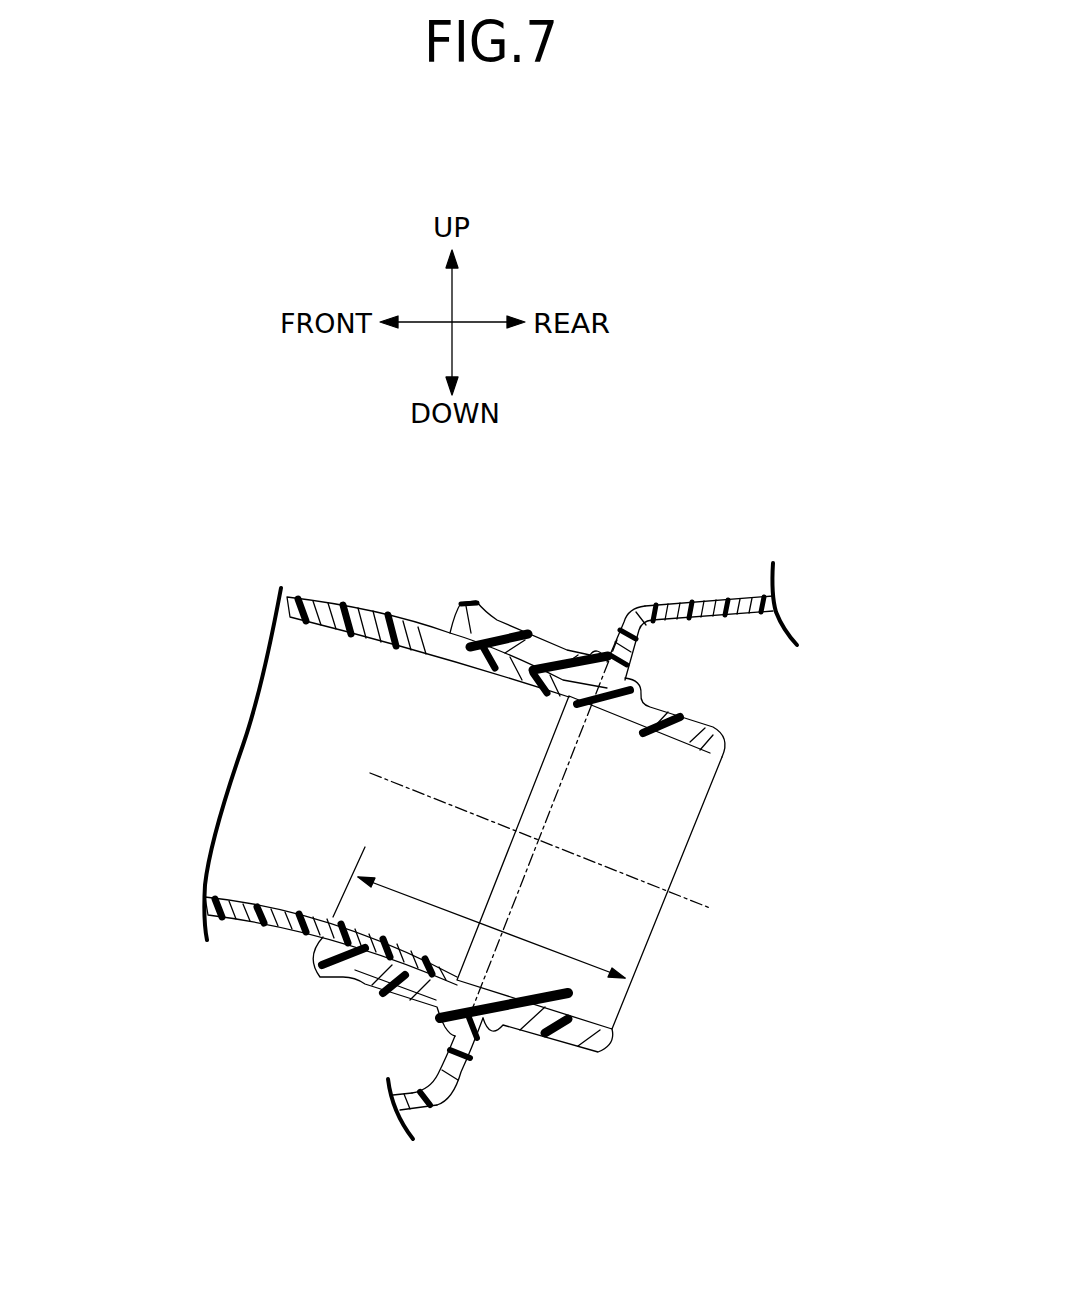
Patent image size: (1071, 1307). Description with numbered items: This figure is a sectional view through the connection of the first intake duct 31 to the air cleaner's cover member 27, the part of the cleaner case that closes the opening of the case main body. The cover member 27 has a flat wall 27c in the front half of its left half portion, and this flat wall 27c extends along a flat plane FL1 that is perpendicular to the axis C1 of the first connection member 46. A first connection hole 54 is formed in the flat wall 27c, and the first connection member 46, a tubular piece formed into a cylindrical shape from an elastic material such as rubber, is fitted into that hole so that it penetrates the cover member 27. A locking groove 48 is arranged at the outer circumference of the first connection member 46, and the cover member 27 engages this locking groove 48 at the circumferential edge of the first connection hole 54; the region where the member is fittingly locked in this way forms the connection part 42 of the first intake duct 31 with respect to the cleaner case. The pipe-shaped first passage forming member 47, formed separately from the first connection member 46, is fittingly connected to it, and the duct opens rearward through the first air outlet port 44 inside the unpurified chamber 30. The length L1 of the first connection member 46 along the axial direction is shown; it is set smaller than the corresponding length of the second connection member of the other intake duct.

The cover member 27 is at (703, 607).
The flat wall 27c is at (624, 623).
The unpurified chamber 30 is at (541, 885).
The first intake duct 31 is at (365, 609).
The connection part 42 is at (447, 1053).
The first air outlet port 44 is at (657, 925).
The first connection member 46 is at (557, 1040).
The first passage forming member 47 is at (265, 913).
The locking groove 48 is at (474, 1030).
The first connection hole 54 is at (637, 703).
The axis C1 is at (467, 809).
The flat plane FL1 is at (566, 774).
The length L1 is at (442, 908).